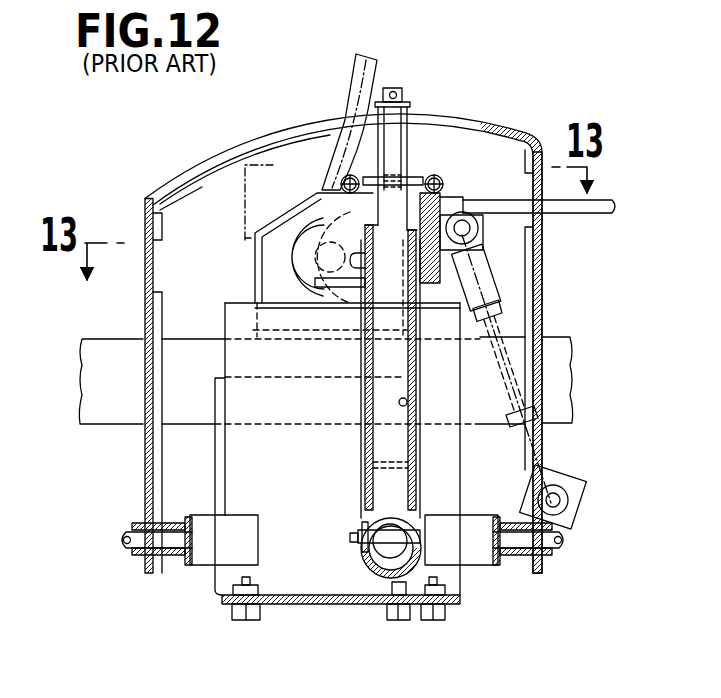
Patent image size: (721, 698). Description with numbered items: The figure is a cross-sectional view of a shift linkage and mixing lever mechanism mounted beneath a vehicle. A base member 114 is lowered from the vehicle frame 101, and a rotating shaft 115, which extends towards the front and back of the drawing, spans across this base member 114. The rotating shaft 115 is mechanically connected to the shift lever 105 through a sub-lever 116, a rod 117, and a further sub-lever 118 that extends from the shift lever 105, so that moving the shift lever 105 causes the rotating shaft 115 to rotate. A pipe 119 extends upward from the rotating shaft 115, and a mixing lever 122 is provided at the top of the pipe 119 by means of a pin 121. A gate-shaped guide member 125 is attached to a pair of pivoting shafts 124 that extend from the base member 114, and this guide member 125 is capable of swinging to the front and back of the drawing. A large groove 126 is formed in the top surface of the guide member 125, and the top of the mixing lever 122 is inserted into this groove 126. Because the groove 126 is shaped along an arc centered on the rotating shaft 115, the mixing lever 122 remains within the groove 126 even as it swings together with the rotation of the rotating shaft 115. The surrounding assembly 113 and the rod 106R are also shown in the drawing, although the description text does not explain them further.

The vehicle frame 101 is at (110, 427).
The shift lever 105 is at (357, 72).
The right link rod 106R is at (590, 200).
The housing 113 is at (120, 138).
The base member 114 is at (343, 607).
The rotating shaft 115 is at (373, 580).
The sub-lever 116 is at (485, 230).
The rod 117 is at (500, 317).
The sub-lever 118 is at (563, 473).
The pipe 119 is at (410, 403).
The pin 121 is at (352, 262).
The mixing lever 122 is at (407, 155).
The pivoting shafts 124 is at (120, 537).
The guide member 125 is at (145, 230).
The groove 126 is at (185, 177).